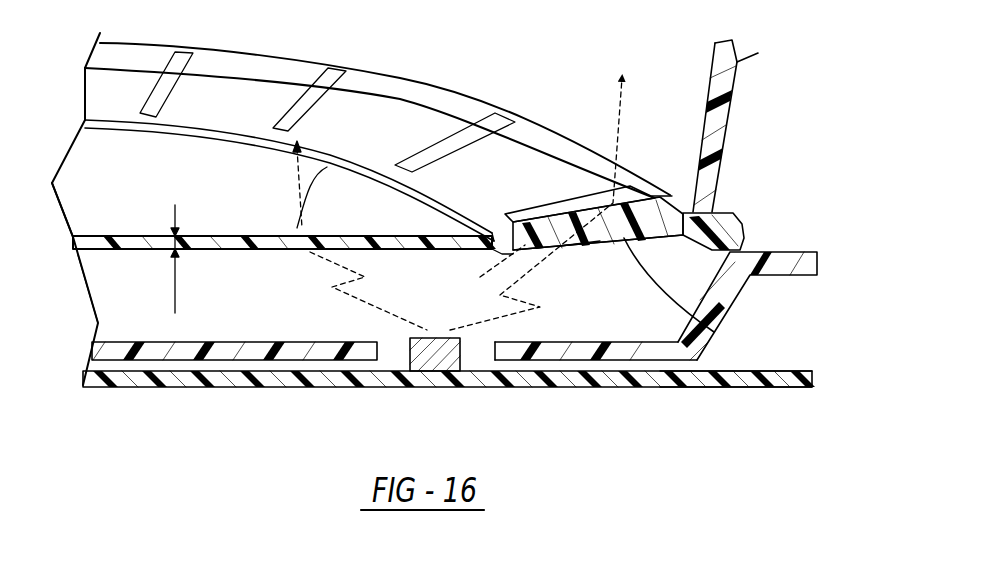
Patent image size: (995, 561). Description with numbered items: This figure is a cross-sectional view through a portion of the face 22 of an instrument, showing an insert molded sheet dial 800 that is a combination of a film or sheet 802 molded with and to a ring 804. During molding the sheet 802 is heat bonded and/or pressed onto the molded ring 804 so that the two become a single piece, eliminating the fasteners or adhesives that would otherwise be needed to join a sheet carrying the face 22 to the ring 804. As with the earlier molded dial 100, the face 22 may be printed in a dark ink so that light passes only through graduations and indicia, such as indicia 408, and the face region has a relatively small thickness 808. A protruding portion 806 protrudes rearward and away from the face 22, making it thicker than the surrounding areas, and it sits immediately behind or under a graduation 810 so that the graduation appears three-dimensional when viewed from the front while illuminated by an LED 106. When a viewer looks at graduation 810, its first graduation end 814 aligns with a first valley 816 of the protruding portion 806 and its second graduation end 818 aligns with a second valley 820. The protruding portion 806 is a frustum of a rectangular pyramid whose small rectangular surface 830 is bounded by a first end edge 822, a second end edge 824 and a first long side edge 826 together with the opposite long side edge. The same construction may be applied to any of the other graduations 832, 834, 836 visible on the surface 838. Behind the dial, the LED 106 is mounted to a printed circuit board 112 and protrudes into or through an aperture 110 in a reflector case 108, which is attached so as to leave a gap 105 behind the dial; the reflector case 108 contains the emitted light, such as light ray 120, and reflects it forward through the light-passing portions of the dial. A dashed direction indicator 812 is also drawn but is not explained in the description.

The insert molded sheet dial 800 is at (418, 82).
The sheet 802 is at (86, 236).
The ring 804 is at (82, 262).
The protruding portion 806 is at (597, 241).
The thickness 808 is at (195, 252).
The graduation 810 is at (588, 203).
The light output direction 812 is at (622, 113).
The first graduation end 814 is at (507, 216).
The first valley 816 is at (481, 277).
The second graduation end 818 is at (668, 200).
The second valley 820 is at (684, 210).
The first end edge 822 is at (540, 249).
The second end edge 824 is at (657, 228).
The first long side edge 826 is at (730, 362).
The small rectangular surface 830 is at (571, 252).
The graduation 832 is at (190, 92).
The graduation 834 is at (312, 102).
The graduation 836 is at (452, 132).
The surface 838 is at (252, 118).
The molded dial 100 is at (146, 169).
The light ray 120 is at (297, 228).
The indicia 408 is at (312, 197).
The face 22 is at (221, 219).
The gap 105 is at (153, 318).
The LED 106 is at (460, 350).
The reflector case 108 is at (720, 307).
The aperture 110 is at (377, 348).
The printed circuit board 112 is at (568, 388).